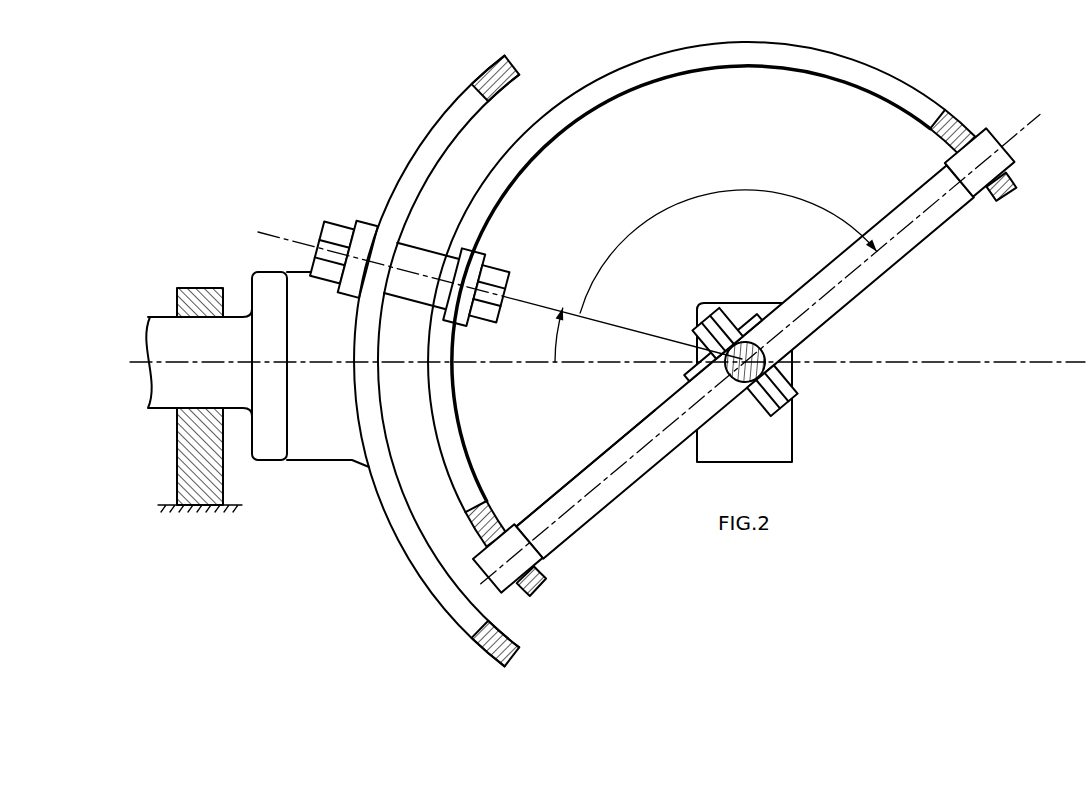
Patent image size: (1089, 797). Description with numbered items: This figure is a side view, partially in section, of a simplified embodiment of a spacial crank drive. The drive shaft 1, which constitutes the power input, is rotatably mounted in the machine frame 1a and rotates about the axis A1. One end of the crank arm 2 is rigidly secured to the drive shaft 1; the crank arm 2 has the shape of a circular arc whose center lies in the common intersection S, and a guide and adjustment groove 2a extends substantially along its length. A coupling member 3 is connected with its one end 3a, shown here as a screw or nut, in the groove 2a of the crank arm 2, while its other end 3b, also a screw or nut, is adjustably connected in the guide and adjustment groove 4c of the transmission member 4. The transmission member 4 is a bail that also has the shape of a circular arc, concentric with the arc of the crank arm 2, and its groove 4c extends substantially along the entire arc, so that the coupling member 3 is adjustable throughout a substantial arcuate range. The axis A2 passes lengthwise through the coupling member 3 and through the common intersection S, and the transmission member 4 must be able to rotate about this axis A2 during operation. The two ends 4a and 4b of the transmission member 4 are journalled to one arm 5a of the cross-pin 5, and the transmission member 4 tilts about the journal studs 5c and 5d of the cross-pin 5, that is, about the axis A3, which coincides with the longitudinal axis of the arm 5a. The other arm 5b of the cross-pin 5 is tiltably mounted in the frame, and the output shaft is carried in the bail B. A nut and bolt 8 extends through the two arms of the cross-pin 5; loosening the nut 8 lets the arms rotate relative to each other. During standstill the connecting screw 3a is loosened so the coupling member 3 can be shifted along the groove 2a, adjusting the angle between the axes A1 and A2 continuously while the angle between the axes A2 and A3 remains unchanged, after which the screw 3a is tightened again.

The drive shaft 1 is at (172, 333).
The frame member 1a is at (178, 458).
The crank arm 2 is at (492, 88).
The guide and adjustment groove 2a is at (418, 150).
The coupling member 3 is at (416, 262).
The connecting screw 3a is at (328, 282).
The other end of the coupling member 3b is at (505, 280).
The transmission member 4 is at (940, 118).
The end of the transmission member 4a is at (538, 586).
The end of the transmission member 4b is at (1018, 190).
The guide and adjustment groove 4c is at (796, 60).
The cross-pin 5 is at (912, 282).
The arm of the cross-pin 5a is at (576, 520).
The arm of the cross-pin 5b is at (690, 368).
The journal stud 5c is at (972, 160).
The journal stud 5d is at (513, 530).
The nut and bolt 8 is at (775, 370).
The bail B is at (783, 450).
The common junction point S is at (752, 340).
The axis A1 is at (607, 377).
The axis A2 is at (483, 290).
The axis A3 is at (767, 348).